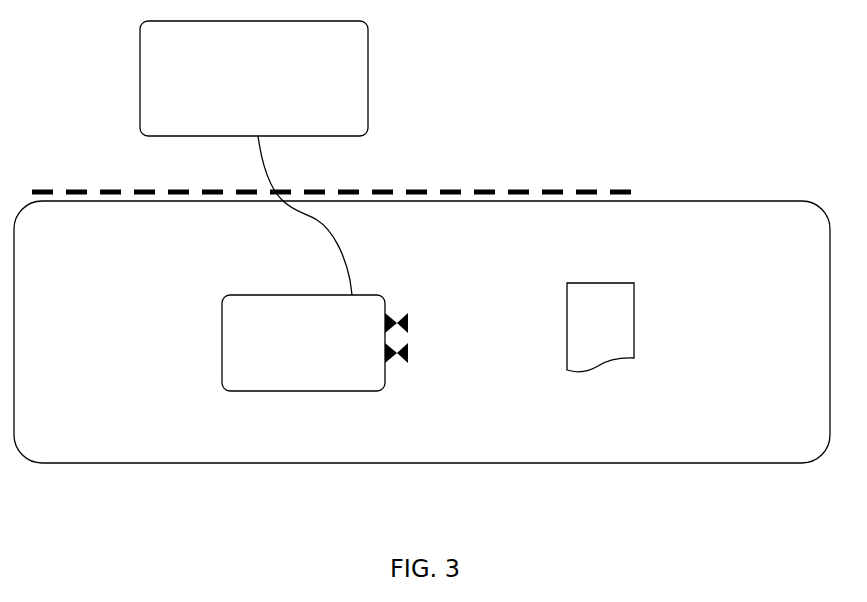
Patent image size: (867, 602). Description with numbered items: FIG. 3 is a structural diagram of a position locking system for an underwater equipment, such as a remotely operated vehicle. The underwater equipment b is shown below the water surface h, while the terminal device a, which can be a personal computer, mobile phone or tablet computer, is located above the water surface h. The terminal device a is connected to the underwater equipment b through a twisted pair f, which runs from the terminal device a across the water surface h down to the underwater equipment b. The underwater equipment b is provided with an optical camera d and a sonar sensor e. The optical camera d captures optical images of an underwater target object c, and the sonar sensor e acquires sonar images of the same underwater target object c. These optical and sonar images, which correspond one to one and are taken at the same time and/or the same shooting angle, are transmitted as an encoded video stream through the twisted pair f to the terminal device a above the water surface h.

The terminal device a is at (254, 78).
The underwater equipment b is at (303, 343).
The underwater target object c is at (600, 327).
The optical camera d is at (414, 322).
The sonar sensor e is at (414, 354).
The twisted pair f is at (258, 155).
The water surface h is at (457, 183).